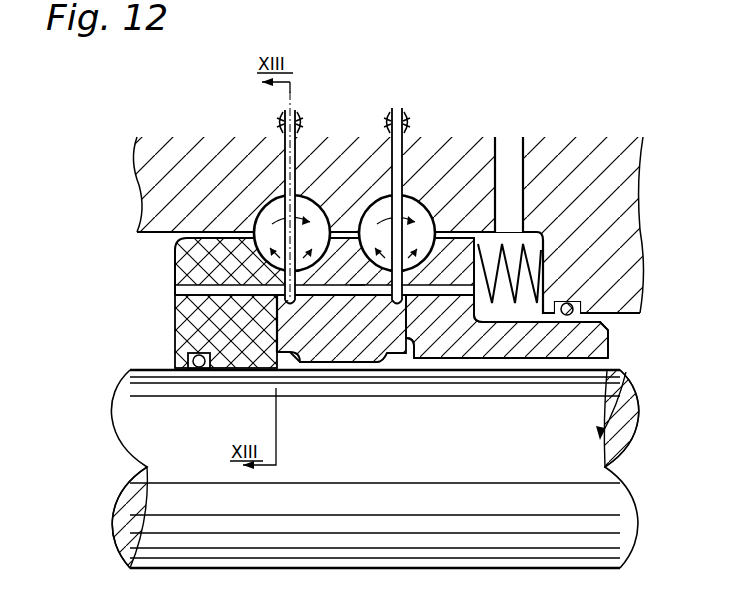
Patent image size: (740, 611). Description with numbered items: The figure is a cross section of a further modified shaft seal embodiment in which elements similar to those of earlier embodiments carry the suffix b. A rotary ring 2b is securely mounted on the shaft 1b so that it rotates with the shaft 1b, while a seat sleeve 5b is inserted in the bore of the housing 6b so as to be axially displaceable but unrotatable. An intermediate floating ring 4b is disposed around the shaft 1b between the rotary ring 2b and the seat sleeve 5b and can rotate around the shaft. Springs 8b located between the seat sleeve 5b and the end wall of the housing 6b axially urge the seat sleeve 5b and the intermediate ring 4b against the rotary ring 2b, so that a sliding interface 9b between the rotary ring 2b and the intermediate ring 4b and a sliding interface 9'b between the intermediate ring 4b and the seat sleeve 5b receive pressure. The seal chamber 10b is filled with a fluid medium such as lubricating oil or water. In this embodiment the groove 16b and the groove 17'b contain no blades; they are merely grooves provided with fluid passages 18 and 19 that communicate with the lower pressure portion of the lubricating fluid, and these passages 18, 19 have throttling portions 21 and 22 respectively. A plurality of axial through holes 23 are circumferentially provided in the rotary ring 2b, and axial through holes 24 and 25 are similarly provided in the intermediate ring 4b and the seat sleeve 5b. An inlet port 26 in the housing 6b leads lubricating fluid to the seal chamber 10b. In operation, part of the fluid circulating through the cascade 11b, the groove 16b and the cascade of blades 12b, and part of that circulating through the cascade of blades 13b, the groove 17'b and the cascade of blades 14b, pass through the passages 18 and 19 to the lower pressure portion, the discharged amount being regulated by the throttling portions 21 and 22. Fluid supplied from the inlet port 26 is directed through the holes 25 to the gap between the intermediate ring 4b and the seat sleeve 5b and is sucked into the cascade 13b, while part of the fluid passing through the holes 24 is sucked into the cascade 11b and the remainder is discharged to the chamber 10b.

The shaft 1b is at (607, 562).
The rotary ring 2b is at (235, 355).
The intermediate ring 4b is at (335, 320).
The seat sleeve 5b is at (530, 360).
The housing 6b is at (152, 165).
The springs 8b is at (547, 253).
The sliding interface 9b is at (256, 362).
The sliding interface 9'b is at (433, 365).
The seal chamber 10b is at (134, 281).
The cascade 11b is at (177, 362).
The cascade of blades 12b is at (312, 320).
The cascade of blades 13b is at (415, 335).
The cascade of blades 14b is at (478, 330).
The groove 16b is at (257, 213).
The groove 17'b is at (440, 183).
The fluid passage 18 is at (284, 167).
The fluid passage 19 is at (403, 163).
The throttling portion 21 is at (297, 125).
The throttling portion 22 is at (390, 128).
The axial through holes 23 is at (188, 295).
The axial through holes 24 is at (358, 295).
The axial through holes 25 is at (487, 360).
The inlet port 26 is at (513, 180).